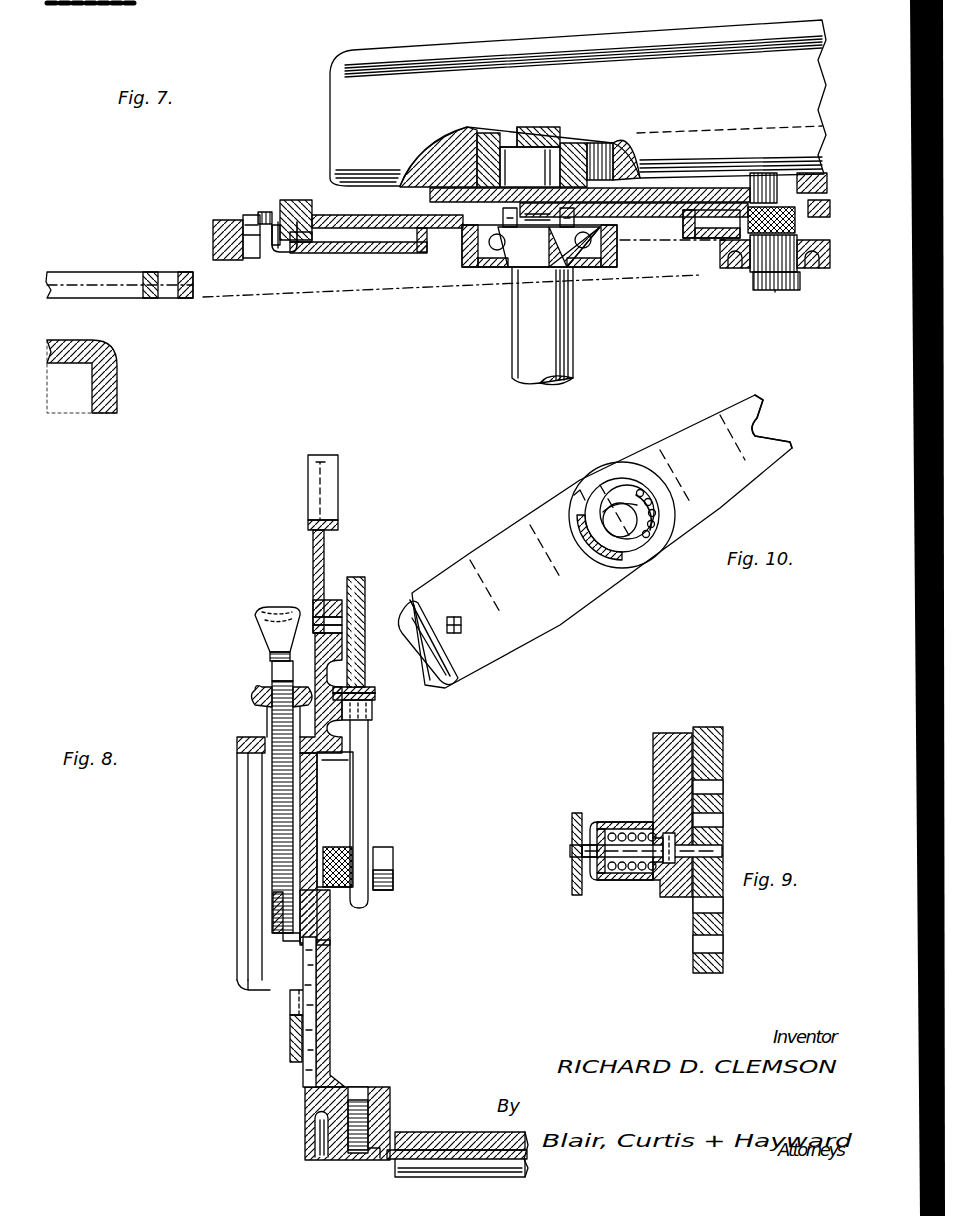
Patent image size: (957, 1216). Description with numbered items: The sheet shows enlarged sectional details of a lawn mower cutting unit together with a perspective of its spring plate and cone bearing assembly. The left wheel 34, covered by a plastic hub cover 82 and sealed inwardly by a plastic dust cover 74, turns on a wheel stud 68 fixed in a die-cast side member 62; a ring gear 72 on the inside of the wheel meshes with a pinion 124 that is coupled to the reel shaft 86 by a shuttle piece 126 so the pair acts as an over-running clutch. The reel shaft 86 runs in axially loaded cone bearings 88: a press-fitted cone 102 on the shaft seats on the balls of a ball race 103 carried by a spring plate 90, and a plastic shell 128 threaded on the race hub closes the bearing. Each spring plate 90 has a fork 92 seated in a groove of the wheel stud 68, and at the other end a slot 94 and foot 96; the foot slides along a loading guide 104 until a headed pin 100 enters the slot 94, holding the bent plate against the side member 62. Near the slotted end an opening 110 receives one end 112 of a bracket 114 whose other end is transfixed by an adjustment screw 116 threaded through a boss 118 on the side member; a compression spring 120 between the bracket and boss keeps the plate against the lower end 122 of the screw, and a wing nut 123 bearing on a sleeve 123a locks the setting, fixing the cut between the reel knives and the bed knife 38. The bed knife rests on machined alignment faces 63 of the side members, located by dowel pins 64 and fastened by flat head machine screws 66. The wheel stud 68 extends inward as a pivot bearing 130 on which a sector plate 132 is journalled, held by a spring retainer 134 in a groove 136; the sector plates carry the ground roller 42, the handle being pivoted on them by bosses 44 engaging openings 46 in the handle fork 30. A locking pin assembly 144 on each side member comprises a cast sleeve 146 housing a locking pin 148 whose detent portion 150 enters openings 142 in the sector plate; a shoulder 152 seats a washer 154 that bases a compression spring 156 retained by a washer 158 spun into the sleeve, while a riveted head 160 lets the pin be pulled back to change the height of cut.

In FIG. 8, the left fork 30 is at (355, 578).
In FIG. 7, the left wheel 34 is at (328, 97).
In FIG. 8, the bed knife 38 is at (530, 1165).
In FIG. 7, the ground roller 42 is at (112, 412).
In FIG. 8, the bosses 44 is at (385, 890).
In FIG. 8, the openings 46 is at (365, 843).
In FIG. 7, the side members 62 is at (215, 228).
In FIG. 8, the side members 62 is at (330, 972).
In FIG. 9, the side members 62 is at (655, 740).
In FIG. 8, the alignment faces 63 is at (385, 1160).
In FIG. 8, the dowel pins 64 is at (318, 1158).
In FIG. 8, the flat head machine screws 66 is at (360, 1158).
In FIG. 7, the wheel stud 68 is at (772, 175).
In FIG. 7, the ring gear 72 is at (605, 145).
In FIG. 7, the dust cover 74 is at (651, 190).
In FIG. 7, the hub cover 82 is at (640, 30).
In FIG. 7, the reel shaft 86 is at (585, 350).
In FIG. 7, the cone bearings 88 is at (617, 258).
In FIG. 10, the cone bearings 88 is at (619, 478).
In FIG. 7, the spring plate 90 is at (343, 216).
In FIG. 10, the spring plate 90 is at (515, 640).
In FIG. 8, the spring plate 90 is at (292, 1060).
In FIG. 7, the fork 92 is at (762, 175).
In FIG. 10, the fork 92 is at (767, 432).
In FIG. 7, the slot 94 is at (262, 250).
In FIG. 10, the slot 94 is at (414, 600).
In FIG. 7, the foot 96 is at (275, 222).
In FIG. 10, the foot 96 is at (400, 608).
In FIG. 7, the headed pin 100 is at (263, 212).
In FIG. 7, the cone 102 is at (518, 248).
In FIG. 7, the ball race 103 is at (620, 232).
In FIG. 7, the loading guide 104 is at (248, 215).
In FIG. 7, the opening 110 is at (305, 250).
In FIG. 10, the opening 110 is at (463, 622).
In FIG. 8, the opening 110 is at (290, 1035).
In FIG. 7, the bracket end 112 is at (280, 250).
In FIG. 8, the bracket end 112 is at (290, 1005).
In FIG. 7, the bracket 114 is at (296, 200).
In FIG. 8, the bracket 114 is at (272, 920).
In FIG. 8, the adjustment screw 116 is at (258, 630).
In FIG. 8, the boss 118 is at (276, 905).
In FIG. 8, the compression spring 120 is at (238, 788).
In FIG. 8, the lower end of screw 122 is at (283, 938).
In FIG. 8, the wing nut 123 is at (258, 690).
In FIG. 8, the sleeve 123a is at (266, 712).
In FIG. 7, the pinion 124 is at (488, 140).
In FIG. 7, the shuttle piece 126 is at (512, 150).
In FIG. 7, the plastic shell 128 is at (470, 268).
In FIG. 10, the plastic shell 128 is at (612, 572).
In FIG. 7, the pivot bearing 130 is at (797, 268).
In FIG. 7, the sector plate 132 is at (100, 272).
In FIG. 8, the sector plate 132 is at (308, 504).
In FIG. 9, the sector plate 132 is at (723, 728).
In FIG. 7, the spring retainer 134 is at (752, 280).
In FIG. 7, the groove 136 is at (780, 290).
In FIG. 7, the openings 142 is at (167, 280).
In FIG. 8, the openings 142 is at (318, 603).
In FIG. 9, the openings 142 is at (723, 818).
In FIG. 9, the locking pin assembly 144 is at (562, 822).
In FIG. 9, the sleeve 146 is at (628, 882).
In FIG. 9, the locking pin 148 is at (613, 882).
In FIG. 9, the detent portion 150 is at (722, 848).
In FIG. 9, the shoulder 152 is at (677, 880).
In FIG. 9, the washer 154 is at (668, 870).
In FIG. 9, the compression spring 156 is at (630, 875).
In FIG. 9, the washer 158 is at (600, 872).
In FIG. 9, the head 160 is at (572, 886).